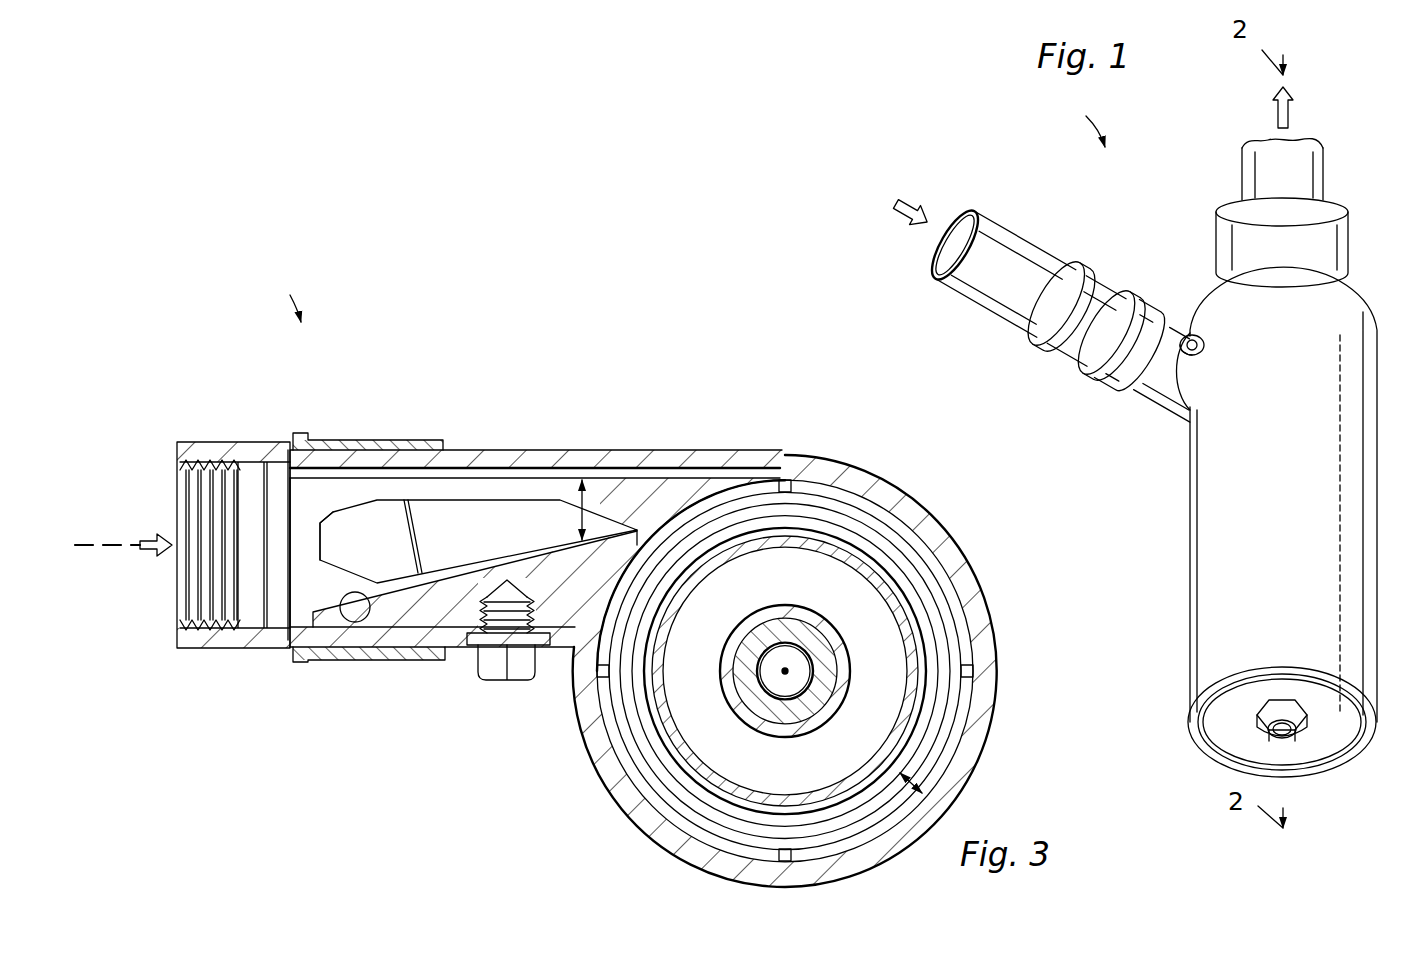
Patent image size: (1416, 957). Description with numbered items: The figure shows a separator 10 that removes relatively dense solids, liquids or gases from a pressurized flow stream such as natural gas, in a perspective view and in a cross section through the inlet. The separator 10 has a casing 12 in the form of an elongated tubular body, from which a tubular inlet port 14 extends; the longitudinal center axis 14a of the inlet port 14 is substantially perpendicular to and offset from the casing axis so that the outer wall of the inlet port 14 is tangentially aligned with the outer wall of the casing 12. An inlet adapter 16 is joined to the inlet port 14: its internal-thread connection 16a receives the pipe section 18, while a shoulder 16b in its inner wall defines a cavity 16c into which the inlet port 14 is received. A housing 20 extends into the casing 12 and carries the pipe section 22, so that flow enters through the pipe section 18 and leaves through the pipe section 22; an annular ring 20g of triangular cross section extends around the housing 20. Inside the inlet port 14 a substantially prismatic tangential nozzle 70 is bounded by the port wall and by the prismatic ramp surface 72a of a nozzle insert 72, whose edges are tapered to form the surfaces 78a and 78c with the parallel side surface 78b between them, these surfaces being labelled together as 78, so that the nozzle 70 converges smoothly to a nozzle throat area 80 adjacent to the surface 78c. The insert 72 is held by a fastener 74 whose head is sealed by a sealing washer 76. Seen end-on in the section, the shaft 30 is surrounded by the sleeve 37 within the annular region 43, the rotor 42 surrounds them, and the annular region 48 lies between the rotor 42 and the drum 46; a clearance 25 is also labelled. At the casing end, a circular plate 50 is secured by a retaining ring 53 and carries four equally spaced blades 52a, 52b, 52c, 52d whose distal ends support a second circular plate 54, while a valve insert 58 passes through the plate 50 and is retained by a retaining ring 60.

In FIG. 3, the separator 10 is at (284, 294).
In FIG. 1, the separator 10 is at (1087, 117).
In FIG. 3, the casing 12 is at (590, 760).
In FIG. 1, the casing 12 is at (1190, 628).
In FIG. 3, the inlet port 14 is at (447, 648).
In FIG. 1, the inlet port 14 is at (1152, 418).
In FIG. 3, the longitudinal center axis 14a is at (122, 548).
In FIG. 3, the inlet adapter 16 is at (213, 442).
In FIG. 1, the inlet adapter 16 is at (1141, 297).
In FIG. 3, the internal-thread connection 16a is at (180, 480).
In FIG. 3, the shoulder 16b is at (300, 647).
In FIG. 3, the cavity 16c is at (383, 443).
In FIG. 1, the pipe section 18 is at (1030, 247).
In FIG. 3, the housing 20 is at (870, 785).
In FIG. 1, the housing 20 is at (1350, 262).
In FIG. 3, the annular ring 20g is at (723, 808).
In FIG. 1, the pipe section 22 is at (1242, 182).
In FIG. 3, the annular gap 25 is at (940, 793).
In FIG. 3, the shaft 30 is at (815, 648).
In FIG. 3, the sleeve 37 is at (752, 628).
In FIG. 3, the rotor 42 is at (781, 606).
In FIG. 3, the annular region 43 is at (764, 704).
In FIG. 3, the drum 46 is at (906, 702).
In FIG. 3, the annular region 48 is at (732, 747).
In FIG. 1, the circular plate 50 is at (1335, 725).
In FIG. 3, the blade 52a is at (609, 670).
In FIG. 3, the blade 52b is at (791, 480).
In FIG. 3, the blade 52c is at (975, 670).
In FIG. 3, the blade 52d is at (793, 840).
In FIG. 1, the retaining ring 53 is at (1215, 738).
In FIG. 3, the circular plate 54 is at (632, 803).
In FIG. 1, the valve insert 58 is at (1295, 742).
In FIG. 1, the retaining ring 60 is at (1298, 702).
In FIG. 3, the tangential nozzle 70 is at (521, 496).
In FIG. 3, the nozzle insert 72 is at (540, 568).
In FIG. 3, the prismatic ramp surface 72a is at (358, 622).
In FIG. 3, the fastener 74 is at (522, 672).
In FIG. 1, the fastener 74 is at (1204, 342).
In FIG. 3, the sealing washer 76 is at (500, 657).
In FIG. 1, the sealing washer 76 is at (1199, 372).
In FIG. 3, the valve member 78 is at (480, 497).
In FIG. 3, the tapered surface 78a is at (385, 555).
In FIG. 3, the parallel surface 78b is at (469, 545).
In FIG. 3, the tapered surface 78c is at (612, 520).
In FIG. 3, the nozzle throat area 80 is at (585, 481).